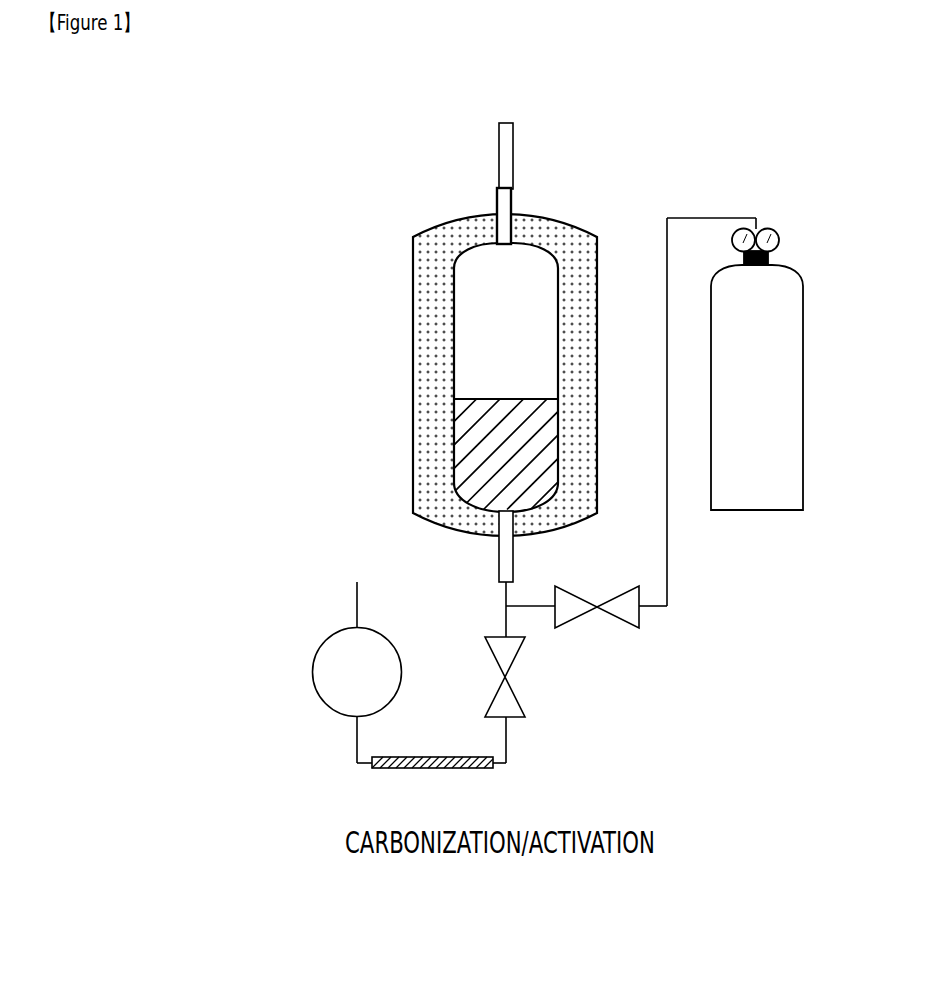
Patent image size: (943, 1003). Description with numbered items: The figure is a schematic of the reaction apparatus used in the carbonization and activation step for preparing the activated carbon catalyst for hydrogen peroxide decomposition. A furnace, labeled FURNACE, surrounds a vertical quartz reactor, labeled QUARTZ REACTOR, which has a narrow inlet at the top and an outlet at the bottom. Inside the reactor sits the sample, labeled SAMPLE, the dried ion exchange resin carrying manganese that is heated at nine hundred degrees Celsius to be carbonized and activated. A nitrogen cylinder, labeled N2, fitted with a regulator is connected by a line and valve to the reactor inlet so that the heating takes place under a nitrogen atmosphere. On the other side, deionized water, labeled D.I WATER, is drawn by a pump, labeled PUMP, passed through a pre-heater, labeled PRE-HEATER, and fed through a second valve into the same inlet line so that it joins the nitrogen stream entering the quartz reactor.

The furnace FURNACE is at (413, 255).
The quartz reactor QUARTZ REACTOR is at (453, 338).
The sample SAMPLE is at (480, 440).
The pre-heater PRE-HEATER is at (432, 781).
The pump PUMP is at (357, 672).
The D.I water D.I WATER is at (359, 587).
The N2 (nitrogen) cylinder N2 is at (757, 370).